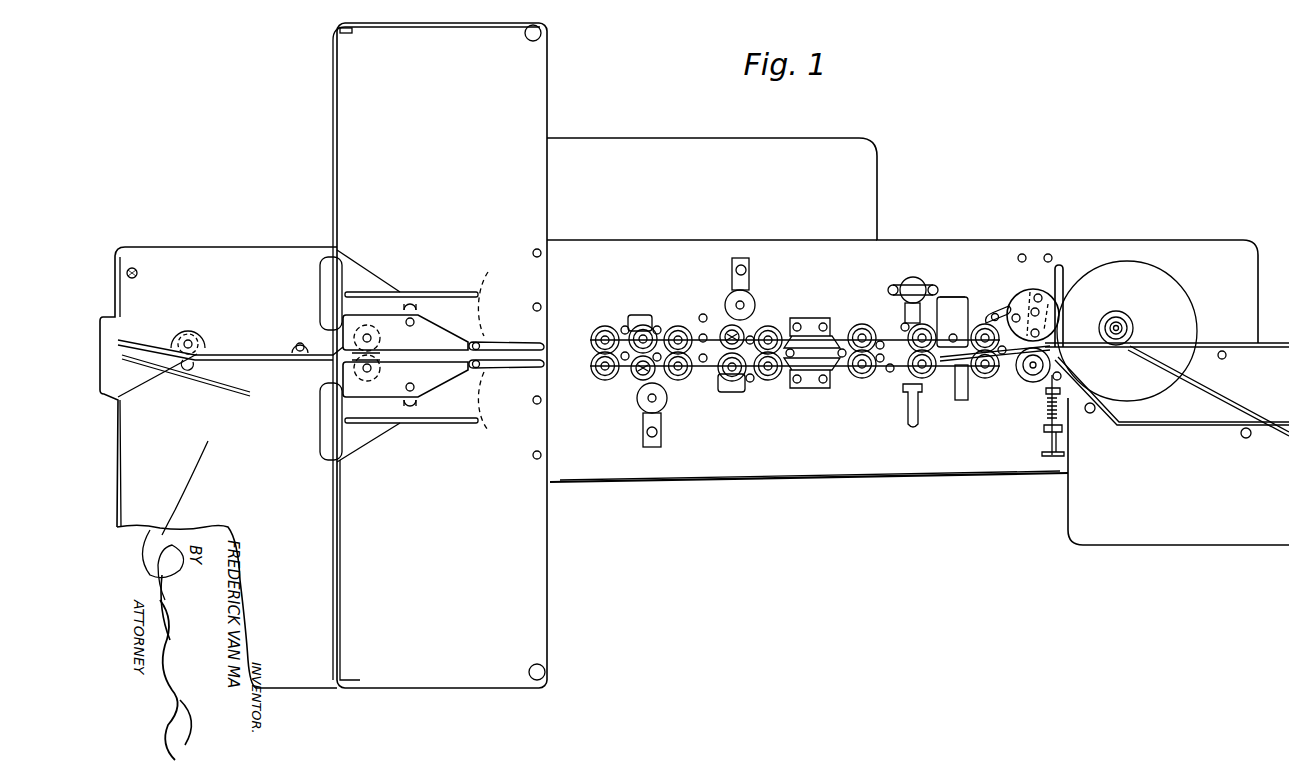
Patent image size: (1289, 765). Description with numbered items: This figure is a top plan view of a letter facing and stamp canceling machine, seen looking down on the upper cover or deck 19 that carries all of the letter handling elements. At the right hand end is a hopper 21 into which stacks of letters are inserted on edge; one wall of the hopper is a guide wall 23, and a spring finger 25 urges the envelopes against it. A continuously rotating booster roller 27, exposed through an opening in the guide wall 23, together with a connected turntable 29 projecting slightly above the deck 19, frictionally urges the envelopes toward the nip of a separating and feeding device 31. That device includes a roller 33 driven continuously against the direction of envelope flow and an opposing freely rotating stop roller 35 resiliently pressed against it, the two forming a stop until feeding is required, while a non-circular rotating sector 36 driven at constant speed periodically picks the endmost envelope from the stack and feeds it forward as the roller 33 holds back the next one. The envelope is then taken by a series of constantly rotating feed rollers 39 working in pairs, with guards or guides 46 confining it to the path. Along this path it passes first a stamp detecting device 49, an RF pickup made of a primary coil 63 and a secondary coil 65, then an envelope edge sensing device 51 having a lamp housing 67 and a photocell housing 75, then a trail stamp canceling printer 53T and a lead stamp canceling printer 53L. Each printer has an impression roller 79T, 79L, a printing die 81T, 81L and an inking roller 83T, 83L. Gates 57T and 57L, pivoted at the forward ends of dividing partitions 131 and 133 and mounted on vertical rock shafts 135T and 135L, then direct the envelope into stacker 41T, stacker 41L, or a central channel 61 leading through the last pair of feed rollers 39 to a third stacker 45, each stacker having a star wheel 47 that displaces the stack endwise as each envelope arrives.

The upper cover 19 is at (705, 470).
The hopper 21 is at (1178, 432).
The guide wall 23 is at (1210, 348).
The spring finger 25 is at (1225, 401).
The booster roller 27 is at (1128, 323).
The turntable 29 is at (1135, 273).
The separating and feeding device 31 is at (1039, 273).
The roller 33 is at (1029, 386).
The stop roller 35 is at (1024, 300).
The rotating sector 36 is at (1004, 311).
The feed rollers 39 is at (612, 329).
The stacker 41L is at (460, 228).
The stacker 41T is at (480, 483).
The stacker 45 is at (163, 520).
The guards or guides 46 is at (805, 335).
The star wheel 47 is at (190, 335).
The stamp detecting device 49 is at (952, 288).
The envelope edge sensing device 51 is at (912, 270).
The stamp canceling printer 53L is at (645, 467).
The stamp canceling printer 53T is at (744, 244).
The gate 57L is at (504, 342).
The gate 57T is at (500, 369).
The central channel 61 is at (420, 360).
The primary coil 63 is at (961, 402).
The secondary coil 65 is at (958, 318).
The housing 67 is at (905, 420).
The housing 75 is at (902, 283).
The impression roller 79L is at (640, 325).
The impression roller 79T is at (722, 385).
The printing die 81L is at (630, 382).
The printing die 81T is at (724, 328).
The inking roller 83L is at (639, 410).
The inking roller 83T is at (730, 291).
The dividing partition 131 is at (425, 335).
The dividing partition 133 is at (430, 372).
The vertical rock shaft 135L is at (503, 407).
The vertical rock shaft 135T is at (503, 298).